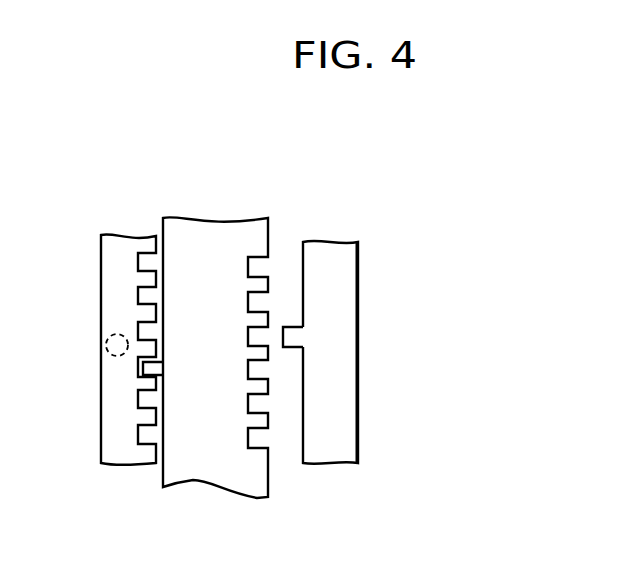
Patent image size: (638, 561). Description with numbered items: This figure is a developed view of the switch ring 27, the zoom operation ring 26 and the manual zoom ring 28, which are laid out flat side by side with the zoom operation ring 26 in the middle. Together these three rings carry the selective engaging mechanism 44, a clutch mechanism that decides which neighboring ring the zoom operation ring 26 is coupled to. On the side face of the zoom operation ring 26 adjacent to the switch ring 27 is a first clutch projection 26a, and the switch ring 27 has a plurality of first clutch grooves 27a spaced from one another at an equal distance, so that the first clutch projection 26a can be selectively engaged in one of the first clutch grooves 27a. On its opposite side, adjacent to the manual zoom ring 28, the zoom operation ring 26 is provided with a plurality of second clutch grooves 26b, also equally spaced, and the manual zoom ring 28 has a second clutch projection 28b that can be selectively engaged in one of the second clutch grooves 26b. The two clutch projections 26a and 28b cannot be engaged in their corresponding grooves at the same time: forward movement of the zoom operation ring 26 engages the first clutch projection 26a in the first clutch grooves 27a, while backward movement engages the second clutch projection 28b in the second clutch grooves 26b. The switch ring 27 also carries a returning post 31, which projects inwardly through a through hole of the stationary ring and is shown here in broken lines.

The selective engaging mechanism 44 is at (172, 146).
The switch ring 27 is at (112, 253).
The first clutch grooves 27a is at (145, 397).
The zoom operation ring 26 is at (220, 248).
The first clutch projection 26a is at (146, 372).
The second clutch grooves 26b is at (258, 437).
The returning post 31 is at (108, 333).
The manual zoom ring 28 is at (341, 262).
The second clutch projection 28b is at (294, 330).